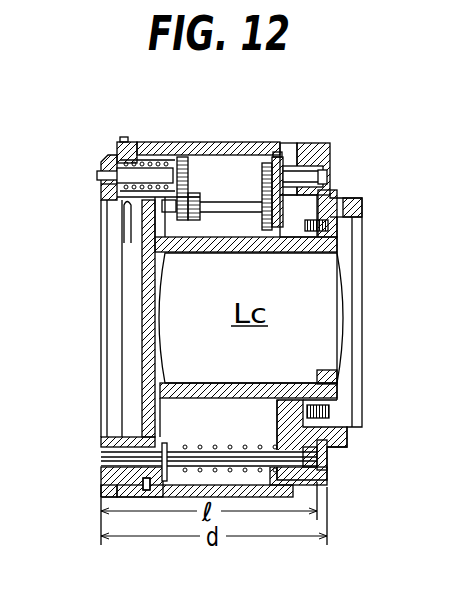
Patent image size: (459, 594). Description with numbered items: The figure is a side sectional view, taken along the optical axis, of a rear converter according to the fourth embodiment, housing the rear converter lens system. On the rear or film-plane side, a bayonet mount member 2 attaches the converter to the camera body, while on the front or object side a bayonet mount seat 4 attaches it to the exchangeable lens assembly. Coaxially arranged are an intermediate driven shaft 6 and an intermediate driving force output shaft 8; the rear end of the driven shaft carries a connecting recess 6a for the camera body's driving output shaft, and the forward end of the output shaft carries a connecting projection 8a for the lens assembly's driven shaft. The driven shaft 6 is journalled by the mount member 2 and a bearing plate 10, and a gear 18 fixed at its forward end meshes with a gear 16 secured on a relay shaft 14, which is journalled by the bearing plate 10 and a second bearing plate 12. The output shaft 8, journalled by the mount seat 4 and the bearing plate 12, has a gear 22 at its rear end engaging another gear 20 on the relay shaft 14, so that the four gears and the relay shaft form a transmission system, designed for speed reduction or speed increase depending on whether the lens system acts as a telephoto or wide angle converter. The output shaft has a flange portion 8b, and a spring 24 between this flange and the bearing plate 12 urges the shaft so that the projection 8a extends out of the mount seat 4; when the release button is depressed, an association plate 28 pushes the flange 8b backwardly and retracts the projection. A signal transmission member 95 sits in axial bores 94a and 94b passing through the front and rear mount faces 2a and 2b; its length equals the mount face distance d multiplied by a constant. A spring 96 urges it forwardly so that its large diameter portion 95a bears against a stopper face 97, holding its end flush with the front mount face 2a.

The bayonet mount member 2 is at (343, 205).
The front mount face 2a is at (103, 470).
The rear mount face 2b is at (330, 473).
The bayonet mount seat 4 is at (101, 160).
The intermediate driven shaft 6 is at (315, 160).
The connecting recess 6a is at (328, 178).
The intermediate driving force output shaft 8 is at (105, 183).
The connecting projection 8a is at (97, 175).
The flange portion 8b is at (122, 205).
The bearing plate 10 is at (300, 171).
The bearing plate 12 is at (165, 168).
The relay shaft 14 is at (222, 201).
The gear 16 is at (265, 195).
The gear 18 is at (277, 152).
The gear 20 is at (195, 193).
The gear 22 is at (183, 155).
The spring 24 is at (147, 160).
The association plate 28 is at (117, 148).
The axial bore 94a is at (110, 490).
The axial bore 94b is at (322, 447).
The signal transmission member 95 is at (101, 452).
The large diameter portion 95a is at (180, 435).
The spring 96 is at (225, 445).
The stopper face 97 is at (165, 480).